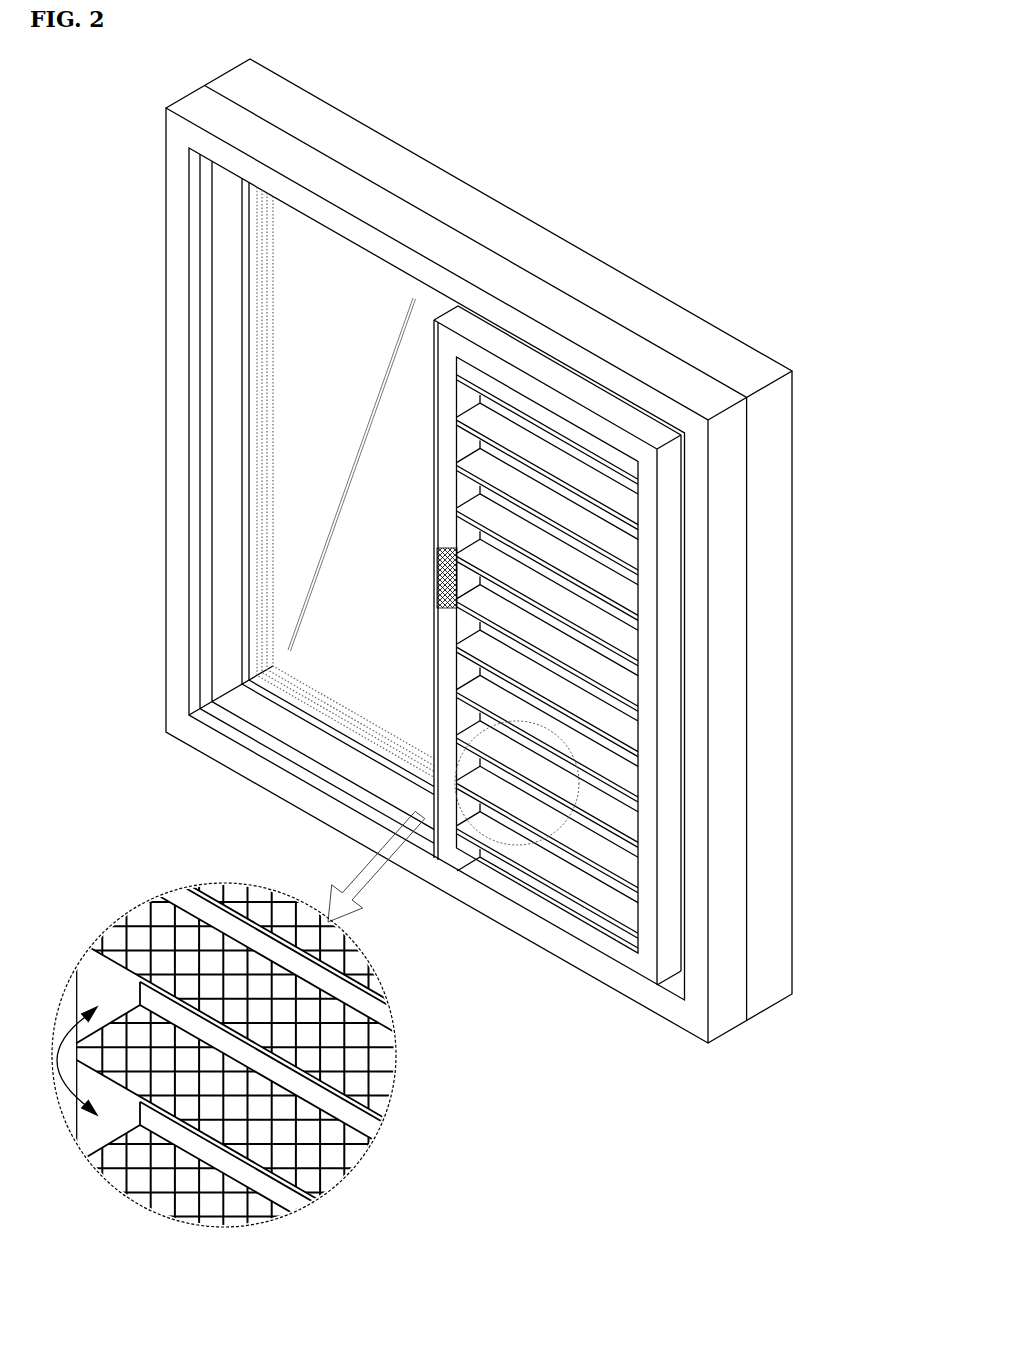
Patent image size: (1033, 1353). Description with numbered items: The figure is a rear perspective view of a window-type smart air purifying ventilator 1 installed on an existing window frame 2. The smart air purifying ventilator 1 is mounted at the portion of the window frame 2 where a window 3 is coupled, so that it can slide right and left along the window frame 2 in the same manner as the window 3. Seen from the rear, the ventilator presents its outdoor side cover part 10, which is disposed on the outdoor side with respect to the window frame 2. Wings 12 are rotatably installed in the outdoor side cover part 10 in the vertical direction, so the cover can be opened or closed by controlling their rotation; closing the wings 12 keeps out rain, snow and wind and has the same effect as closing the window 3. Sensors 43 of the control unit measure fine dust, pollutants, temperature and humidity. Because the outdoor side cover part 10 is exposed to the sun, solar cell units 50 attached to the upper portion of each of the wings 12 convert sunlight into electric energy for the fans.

The window-type smart air purifying ventilator 1 is at (698, 593).
The window frame 2 is at (773, 193).
The window 3 is at (283, 425).
The outdoor side cover part 10 is at (632, 693).
The wings 12 is at (395, 1009).
The sensors 43 is at (437, 542).
The solar cell units 50 is at (389, 1057).